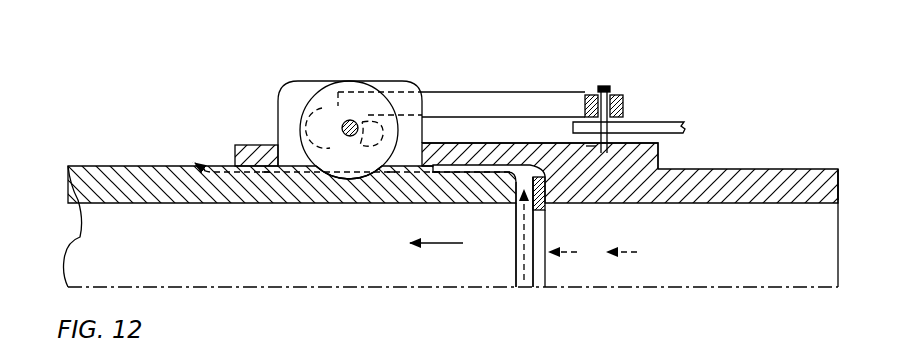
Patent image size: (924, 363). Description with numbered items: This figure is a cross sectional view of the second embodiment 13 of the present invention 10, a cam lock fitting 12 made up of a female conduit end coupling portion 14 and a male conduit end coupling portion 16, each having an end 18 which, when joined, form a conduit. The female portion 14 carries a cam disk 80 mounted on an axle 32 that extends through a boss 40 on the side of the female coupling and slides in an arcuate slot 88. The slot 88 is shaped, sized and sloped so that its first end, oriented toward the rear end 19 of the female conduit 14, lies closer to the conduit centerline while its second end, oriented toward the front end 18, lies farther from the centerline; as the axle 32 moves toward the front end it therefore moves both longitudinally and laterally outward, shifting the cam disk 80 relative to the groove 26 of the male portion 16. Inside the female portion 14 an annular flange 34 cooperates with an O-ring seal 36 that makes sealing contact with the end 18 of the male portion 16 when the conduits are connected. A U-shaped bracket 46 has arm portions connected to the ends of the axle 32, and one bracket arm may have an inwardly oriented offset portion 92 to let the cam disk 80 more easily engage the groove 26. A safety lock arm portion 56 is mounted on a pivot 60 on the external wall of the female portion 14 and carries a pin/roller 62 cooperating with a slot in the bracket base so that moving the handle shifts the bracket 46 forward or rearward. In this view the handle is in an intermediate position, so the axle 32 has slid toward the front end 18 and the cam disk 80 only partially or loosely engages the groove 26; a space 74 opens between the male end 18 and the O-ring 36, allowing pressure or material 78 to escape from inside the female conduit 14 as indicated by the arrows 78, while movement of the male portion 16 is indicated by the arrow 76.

The present invention 10 is at (748, 62).
The cam lock fitting 12 is at (532, 67).
The second embodiment 13 is at (700, 78).
The female conduit end coupling portion 14 is at (782, 167).
The male conduit end coupling portion 16 is at (113, 165).
The end 18 is at (236, 155).
The rear end 19 is at (840, 187).
The groove 26 is at (357, 178).
The axle 32 is at (352, 118).
The annular flange 34 is at (553, 203).
The O-ring seal 36 is at (546, 226).
The right boss 40 is at (278, 108).
The U-shaped bracket 46 is at (485, 107).
The safety lock arm portion 56 is at (653, 126).
The pivot 60 is at (587, 148).
The pin/roller 62 is at (606, 86).
The space 74 is at (517, 250).
The arrow 76 is at (438, 245).
The pressure or material 78 is at (622, 255).
The cam disk 80 is at (327, 97).
The arcuate slot 88 is at (332, 130).
The inwardly oriented offset portion 92 is at (375, 172).